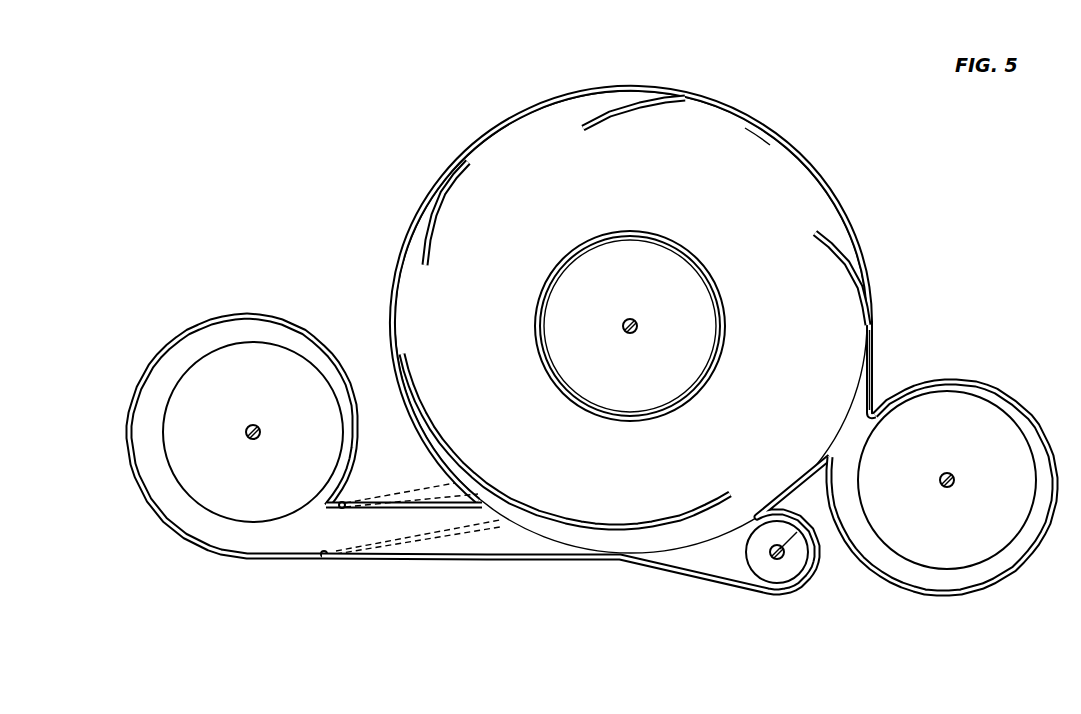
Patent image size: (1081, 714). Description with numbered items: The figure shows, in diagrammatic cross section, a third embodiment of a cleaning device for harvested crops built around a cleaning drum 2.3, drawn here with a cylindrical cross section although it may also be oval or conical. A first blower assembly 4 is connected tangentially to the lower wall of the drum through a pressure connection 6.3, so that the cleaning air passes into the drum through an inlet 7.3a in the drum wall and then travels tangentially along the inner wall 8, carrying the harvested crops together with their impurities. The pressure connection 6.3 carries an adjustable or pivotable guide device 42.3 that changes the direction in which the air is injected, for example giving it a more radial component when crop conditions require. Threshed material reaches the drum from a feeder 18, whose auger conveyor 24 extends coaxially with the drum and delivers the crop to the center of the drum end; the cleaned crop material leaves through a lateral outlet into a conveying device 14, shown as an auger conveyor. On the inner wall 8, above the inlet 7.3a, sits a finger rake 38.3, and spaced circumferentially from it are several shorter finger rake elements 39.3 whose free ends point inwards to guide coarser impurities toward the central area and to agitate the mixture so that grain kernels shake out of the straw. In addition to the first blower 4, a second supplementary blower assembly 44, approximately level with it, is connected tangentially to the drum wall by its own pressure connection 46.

The cleaning drum 2.3 is at (722, 96).
The blower assembly 4 is at (168, 337).
The pressure connection 6.3 is at (345, 527).
The inlet 7.3a is at (523, 529).
The inner wall 8 is at (758, 131).
The conveying device 14 is at (757, 592).
The feeder 18 is at (630, 326).
The auger conveyor 24 is at (621, 278).
The finger rake 38.3 is at (588, 531).
The finger rake elements 39.3 is at (600, 114).
The guide device 42.3 is at (418, 542).
The supplementary blower assembly 44 is at (1001, 392).
The pressure connection 46 is at (856, 422).